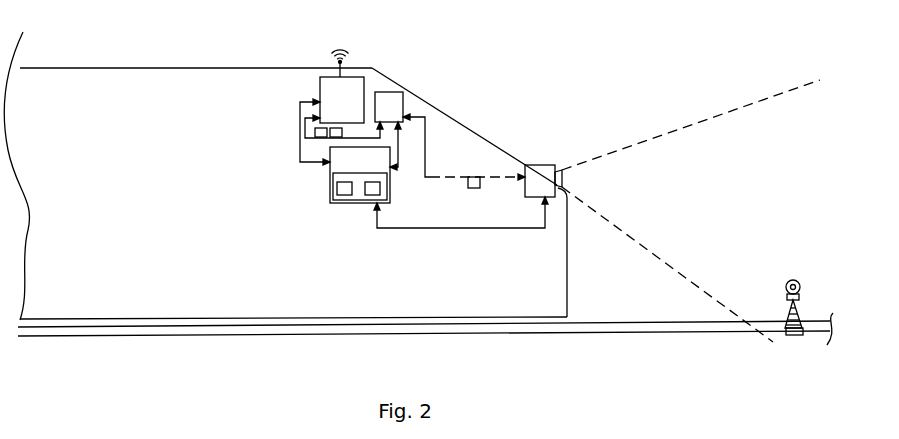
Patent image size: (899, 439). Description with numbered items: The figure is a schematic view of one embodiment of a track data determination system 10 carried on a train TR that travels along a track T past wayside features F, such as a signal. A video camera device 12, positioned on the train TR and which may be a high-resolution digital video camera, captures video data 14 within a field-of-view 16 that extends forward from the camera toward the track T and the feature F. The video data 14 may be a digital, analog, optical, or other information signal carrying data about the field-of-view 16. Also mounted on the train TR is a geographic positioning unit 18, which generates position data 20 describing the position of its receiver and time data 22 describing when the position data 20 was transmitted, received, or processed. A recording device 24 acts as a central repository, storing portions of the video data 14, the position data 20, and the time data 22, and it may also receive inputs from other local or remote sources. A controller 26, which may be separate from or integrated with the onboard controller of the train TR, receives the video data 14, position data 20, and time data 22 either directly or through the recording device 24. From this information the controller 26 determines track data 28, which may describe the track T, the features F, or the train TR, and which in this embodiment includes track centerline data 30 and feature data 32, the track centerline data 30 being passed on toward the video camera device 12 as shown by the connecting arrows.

The track data determination system 10 is at (343, 250).
The video camera device 12 is at (543, 165).
The video data 14 is at (472, 176).
The field-of-view 16 is at (736, 108).
The geographic positioning unit 18 is at (320, 82).
The position data 20 is at (316, 139).
The time data 22 is at (336, 139).
The recording device 24 is at (388, 92).
The controller 26 is at (333, 190).
The track data 28 is at (328, 170).
The track centerline data 30 is at (367, 197).
The feature data 32 is at (343, 197).
The train TR is at (60, 68).
The track T is at (145, 337).
The feature F is at (788, 275).